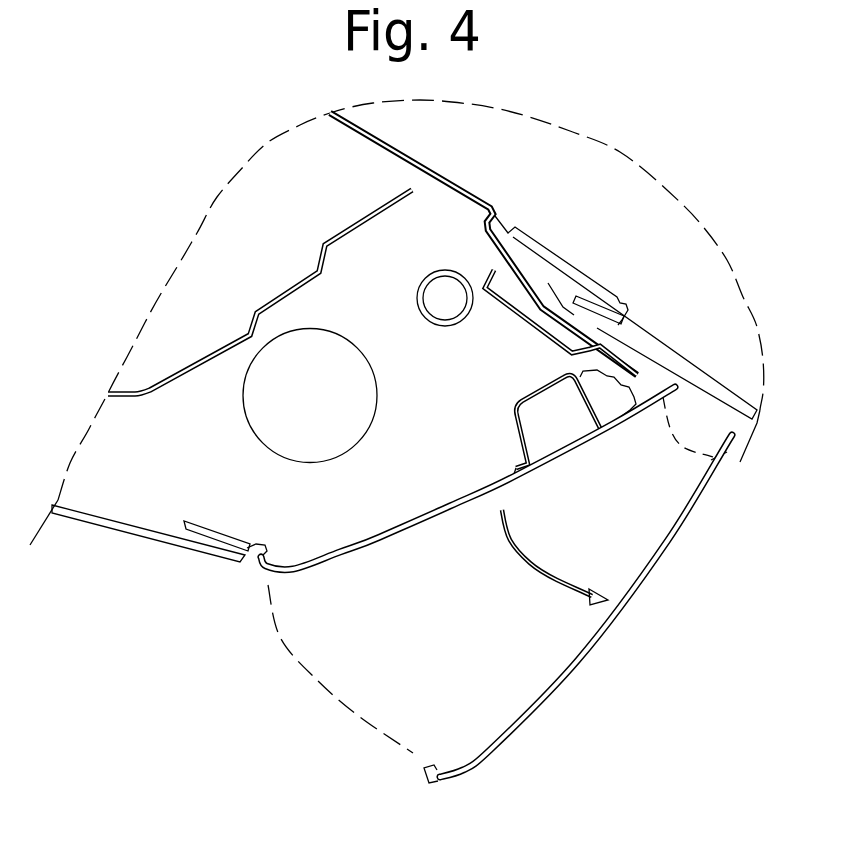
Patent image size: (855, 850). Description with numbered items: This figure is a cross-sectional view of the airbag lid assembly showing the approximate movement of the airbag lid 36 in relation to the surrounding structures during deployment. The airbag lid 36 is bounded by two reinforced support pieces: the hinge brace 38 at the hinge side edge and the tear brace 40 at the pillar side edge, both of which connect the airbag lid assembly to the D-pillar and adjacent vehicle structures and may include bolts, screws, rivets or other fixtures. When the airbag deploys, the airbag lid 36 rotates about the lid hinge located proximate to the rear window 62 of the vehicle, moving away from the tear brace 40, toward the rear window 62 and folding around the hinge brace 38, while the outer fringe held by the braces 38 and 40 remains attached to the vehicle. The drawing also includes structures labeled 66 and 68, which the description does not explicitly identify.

The airbag lid 36 is at (402, 533).
The hinge brace 38 is at (518, 437).
The tear brace 40 is at (214, 553).
The rear window 62 is at (668, 354).
The cross member 66 is at (443, 162).
The retaining wire 68 is at (533, 327).